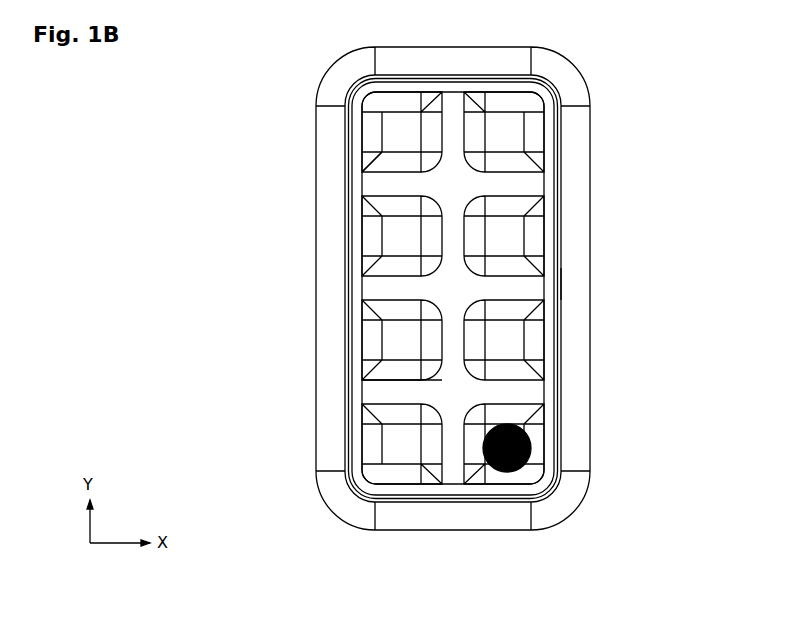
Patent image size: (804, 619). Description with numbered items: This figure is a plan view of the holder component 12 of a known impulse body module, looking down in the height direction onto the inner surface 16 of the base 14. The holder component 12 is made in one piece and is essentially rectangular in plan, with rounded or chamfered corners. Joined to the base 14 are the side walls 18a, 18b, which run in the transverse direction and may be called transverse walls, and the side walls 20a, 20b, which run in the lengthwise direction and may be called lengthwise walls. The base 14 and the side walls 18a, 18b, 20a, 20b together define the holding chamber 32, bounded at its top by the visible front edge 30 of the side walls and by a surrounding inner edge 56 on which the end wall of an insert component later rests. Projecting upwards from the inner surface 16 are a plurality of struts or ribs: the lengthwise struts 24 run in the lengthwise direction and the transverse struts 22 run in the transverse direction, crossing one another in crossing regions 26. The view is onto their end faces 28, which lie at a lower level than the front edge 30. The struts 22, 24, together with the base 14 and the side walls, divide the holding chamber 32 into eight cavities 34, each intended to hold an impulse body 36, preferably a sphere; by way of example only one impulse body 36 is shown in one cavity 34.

The holder component 12 is at (322, 218).
The base 14 is at (400, 130).
The inner surface 16 is at (503, 135).
The side wall 18a is at (445, 47).
The side wall 18b is at (453, 531).
The side wall 20a is at (583, 318).
The side wall 20b is at (325, 310).
The transverse strut 22 is at (387, 392).
The lengthwise strut 24 is at (453, 237).
The crossing region 26 is at (452, 192).
The end face 28 is at (393, 187).
The front edge 30 is at (333, 391).
The holding chamber 32 is at (515, 99).
The cavity 34 is at (397, 239).
The impulse body 36 is at (526, 461).
The surrounding inner edge 56 is at (548, 285).